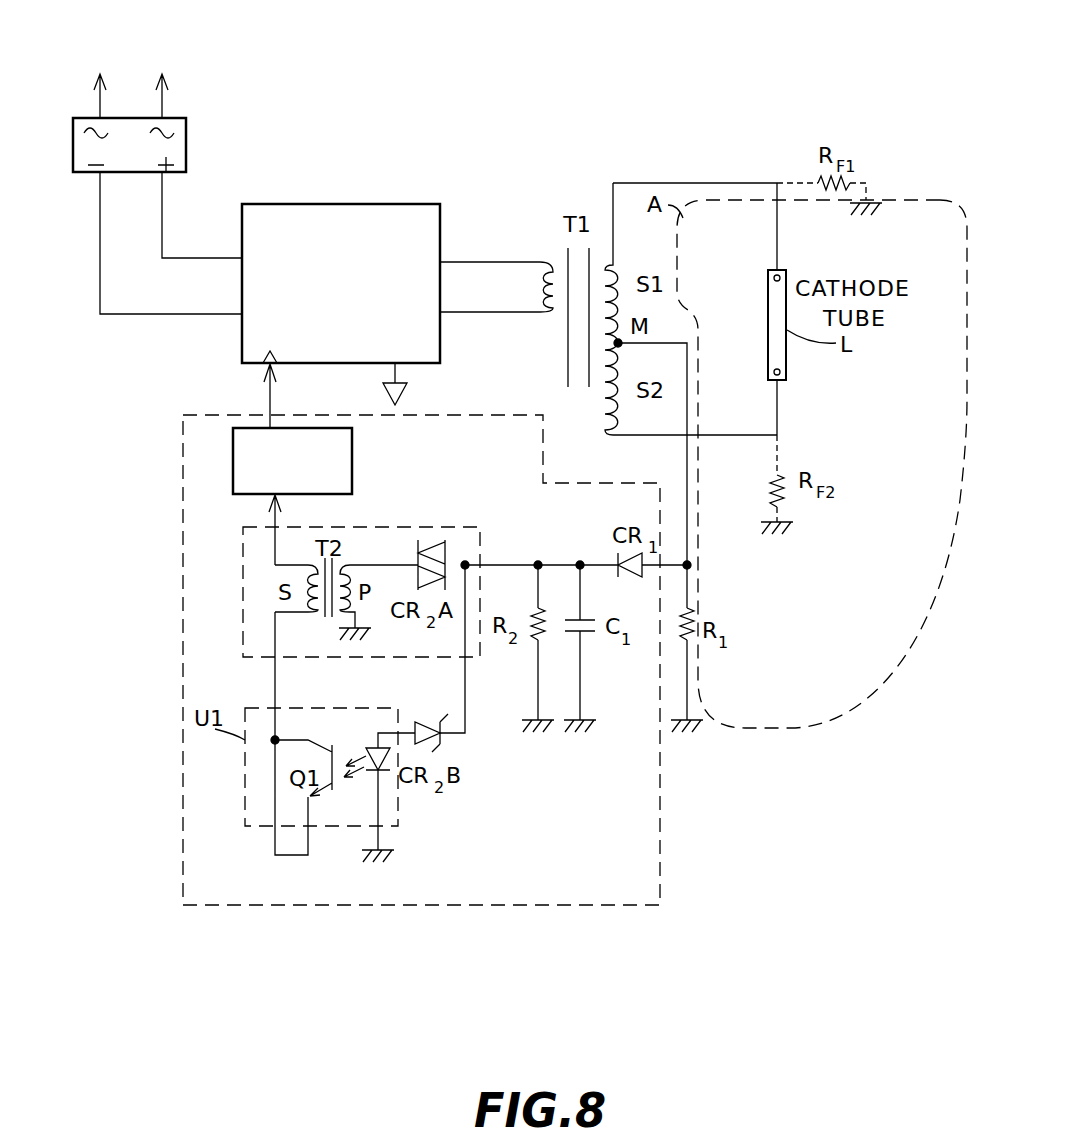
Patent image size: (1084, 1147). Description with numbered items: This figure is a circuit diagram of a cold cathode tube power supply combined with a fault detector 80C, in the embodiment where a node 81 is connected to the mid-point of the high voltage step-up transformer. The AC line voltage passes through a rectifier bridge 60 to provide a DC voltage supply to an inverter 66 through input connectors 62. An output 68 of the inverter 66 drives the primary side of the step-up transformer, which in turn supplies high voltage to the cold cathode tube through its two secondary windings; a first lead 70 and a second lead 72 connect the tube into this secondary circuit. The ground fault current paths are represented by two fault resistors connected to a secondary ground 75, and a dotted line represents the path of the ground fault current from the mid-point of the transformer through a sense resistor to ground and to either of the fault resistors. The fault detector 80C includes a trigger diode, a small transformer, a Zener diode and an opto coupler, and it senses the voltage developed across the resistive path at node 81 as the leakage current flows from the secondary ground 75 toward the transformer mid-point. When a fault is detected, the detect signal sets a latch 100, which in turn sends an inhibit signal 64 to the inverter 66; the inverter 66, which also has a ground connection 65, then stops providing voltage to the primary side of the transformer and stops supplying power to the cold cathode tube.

The rectifier bridge 60 is at (184, 120).
The input connectors 62 is at (231, 255).
The inhibit signal 64 is at (268, 390).
The inverter ground connection 65 is at (384, 394).
The inverter 66 is at (343, 204).
The output 68 is at (478, 348).
The first cathode tube lead 70 is at (777, 249).
The second cathode tube lead 72 is at (777, 414).
The secondary ground 75 is at (877, 208).
The fault detector 80C is at (656, 820).
The node 81 is at (690, 570).
The latch 100 is at (355, 474).